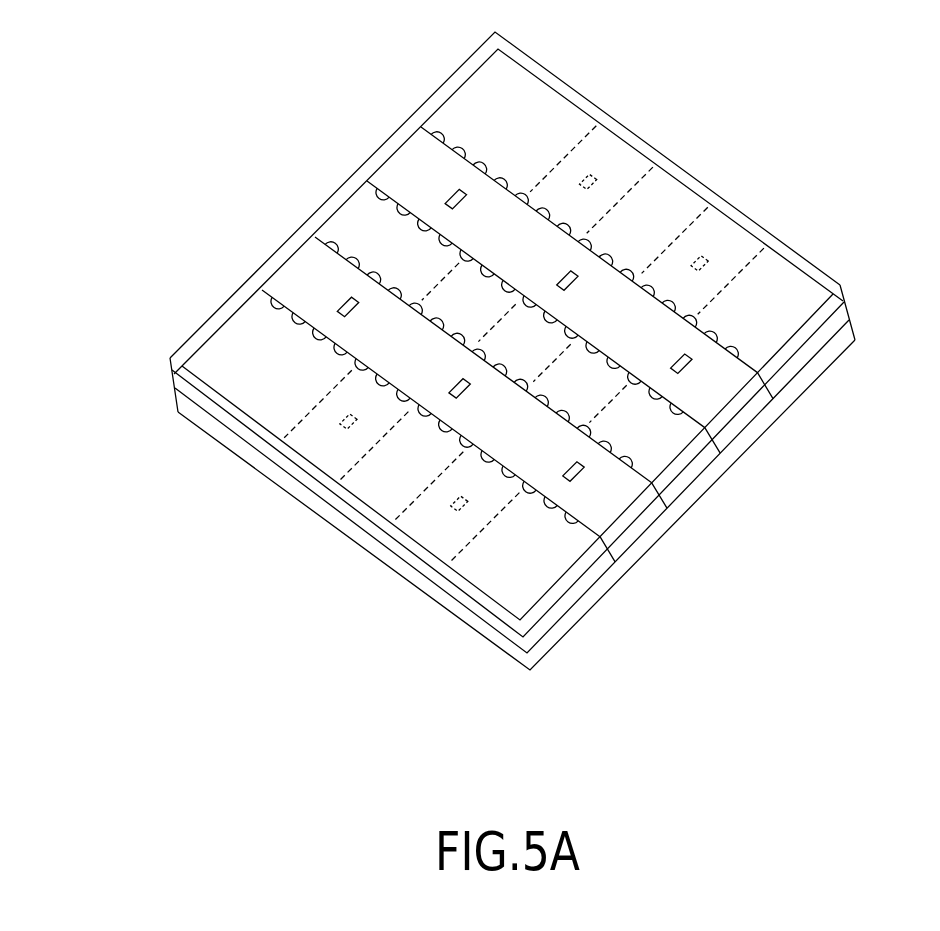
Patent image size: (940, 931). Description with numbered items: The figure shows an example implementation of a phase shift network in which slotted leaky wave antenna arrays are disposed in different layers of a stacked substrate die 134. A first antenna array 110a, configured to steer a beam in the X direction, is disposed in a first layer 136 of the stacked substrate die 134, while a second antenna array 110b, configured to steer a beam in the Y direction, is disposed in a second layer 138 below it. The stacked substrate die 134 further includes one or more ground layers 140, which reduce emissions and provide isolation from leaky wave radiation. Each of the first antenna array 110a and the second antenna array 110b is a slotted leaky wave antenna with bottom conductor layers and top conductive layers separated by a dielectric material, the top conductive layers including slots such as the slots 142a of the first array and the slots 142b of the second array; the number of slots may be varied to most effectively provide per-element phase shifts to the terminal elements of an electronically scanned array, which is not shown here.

The first antenna array 110a is at (268, 171).
The second antenna array 110b is at (714, 145).
The slot 142a is at (452, 192).
The slot 142b is at (702, 258).
The stacked substrate die 134 is at (108, 360).
The first layer 136 is at (553, 599).
The second layer 138 is at (537, 634).
The ground layer 140 is at (822, 373).